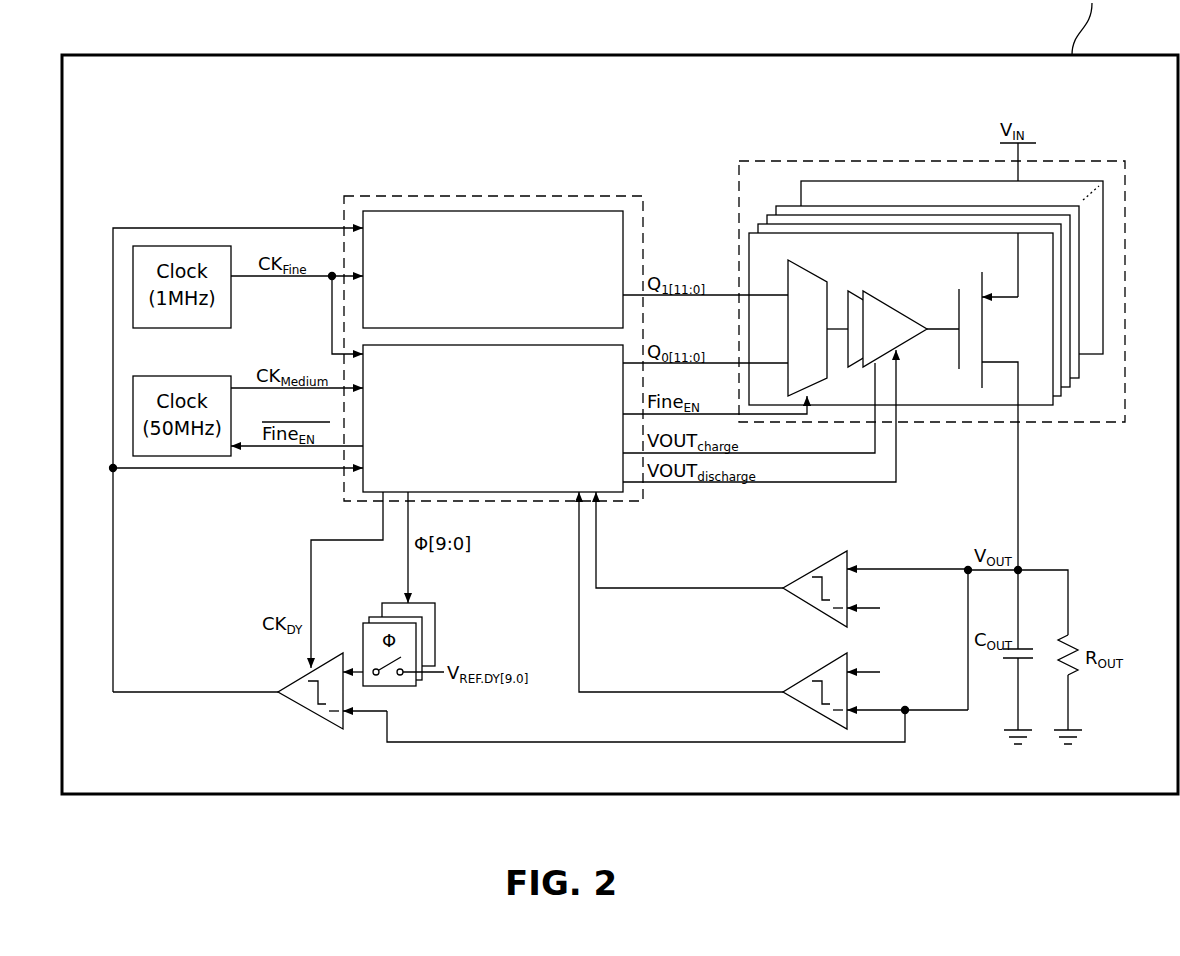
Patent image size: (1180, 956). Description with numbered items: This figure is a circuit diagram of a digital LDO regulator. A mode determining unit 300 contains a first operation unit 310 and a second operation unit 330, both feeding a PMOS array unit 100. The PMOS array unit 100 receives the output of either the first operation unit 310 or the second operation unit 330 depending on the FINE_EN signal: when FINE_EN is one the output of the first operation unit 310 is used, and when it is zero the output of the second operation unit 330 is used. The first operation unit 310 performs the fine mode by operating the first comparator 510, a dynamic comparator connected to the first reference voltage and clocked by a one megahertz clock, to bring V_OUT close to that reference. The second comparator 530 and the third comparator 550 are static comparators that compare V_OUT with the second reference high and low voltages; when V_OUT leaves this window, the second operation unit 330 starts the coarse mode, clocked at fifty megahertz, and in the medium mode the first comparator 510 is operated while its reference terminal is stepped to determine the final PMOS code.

The PMOS array unit 100 is at (1092, 161).
The mode determining unit 300 is at (584, 196).
The first operation unit 310 is at (393, 211).
The second operation unit 330 is at (533, 492).
The first comparator 510 is at (310, 713).
The second comparator 530 is at (815, 568).
The third comparator 550 is at (815, 708).